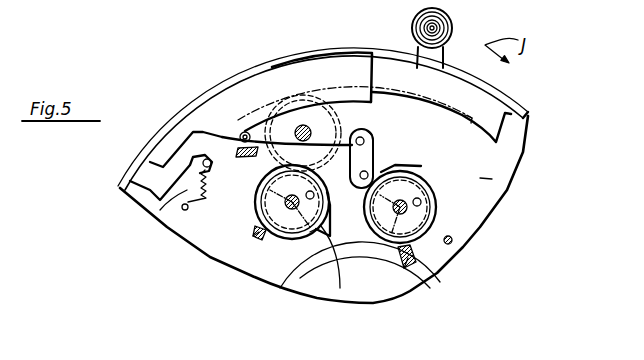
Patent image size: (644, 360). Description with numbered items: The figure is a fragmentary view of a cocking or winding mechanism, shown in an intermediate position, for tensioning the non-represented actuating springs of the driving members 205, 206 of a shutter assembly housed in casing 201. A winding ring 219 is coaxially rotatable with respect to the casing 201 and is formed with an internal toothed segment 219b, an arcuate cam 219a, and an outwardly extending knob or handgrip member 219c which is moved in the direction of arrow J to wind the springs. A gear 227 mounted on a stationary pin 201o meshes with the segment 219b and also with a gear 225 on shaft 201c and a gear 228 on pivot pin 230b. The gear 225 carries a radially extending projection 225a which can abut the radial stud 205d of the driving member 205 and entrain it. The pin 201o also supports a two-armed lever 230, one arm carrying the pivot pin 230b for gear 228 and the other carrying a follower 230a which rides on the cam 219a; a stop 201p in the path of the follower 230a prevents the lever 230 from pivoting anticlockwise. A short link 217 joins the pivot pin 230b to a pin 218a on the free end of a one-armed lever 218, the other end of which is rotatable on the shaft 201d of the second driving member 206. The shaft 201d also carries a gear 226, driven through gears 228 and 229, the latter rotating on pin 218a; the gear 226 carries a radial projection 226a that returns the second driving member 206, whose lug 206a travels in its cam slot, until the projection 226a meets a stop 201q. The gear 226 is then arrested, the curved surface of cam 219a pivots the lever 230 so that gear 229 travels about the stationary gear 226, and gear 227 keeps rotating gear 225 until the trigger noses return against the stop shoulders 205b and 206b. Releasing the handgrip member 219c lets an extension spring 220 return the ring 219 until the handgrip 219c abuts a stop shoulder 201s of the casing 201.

The casing 201 is at (493, 92).
The shaft 201c is at (270, 193).
The shaft 201d is at (396, 215).
The stationary pin 201o is at (300, 125).
The stop 201p is at (243, 152).
The stop 201q is at (451, 244).
The stop shoulder 201s is at (408, 57).
The driving member 205 is at (302, 233).
The stop shoulder 205b is at (340, 288).
The radial stud 205d is at (259, 233).
The second driving member 206 is at (432, 184).
The lug 206a is at (413, 249).
The stop shoulder 206b is at (488, 178).
The short link 217 is at (380, 138).
The one-armed lever 218 is at (328, 222).
The pin 218a is at (376, 188).
The winding ring 219 is at (505, 115).
The arcuate cam 219a is at (222, 132).
The internal toothed segment 219b is at (467, 122).
The handgrip member 219c is at (450, 27).
The extension spring 220 is at (178, 188).
The gear 225 is at (285, 223).
The radially extending projection 225a is at (257, 231).
The gear 226 is at (424, 212).
The radial projection 226a is at (400, 261).
The gear 227 is at (322, 92).
The gear 228 is at (362, 131).
The gear 229 is at (373, 165).
The two-armed lever 230 is at (366, 81).
The follower 230a is at (278, 101).
The pivot pin 230b is at (372, 135).